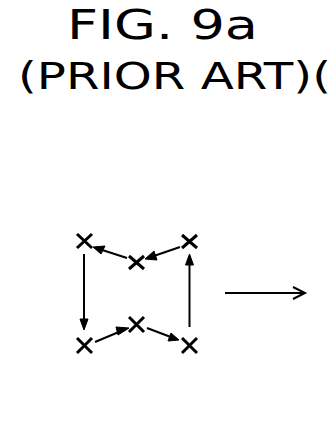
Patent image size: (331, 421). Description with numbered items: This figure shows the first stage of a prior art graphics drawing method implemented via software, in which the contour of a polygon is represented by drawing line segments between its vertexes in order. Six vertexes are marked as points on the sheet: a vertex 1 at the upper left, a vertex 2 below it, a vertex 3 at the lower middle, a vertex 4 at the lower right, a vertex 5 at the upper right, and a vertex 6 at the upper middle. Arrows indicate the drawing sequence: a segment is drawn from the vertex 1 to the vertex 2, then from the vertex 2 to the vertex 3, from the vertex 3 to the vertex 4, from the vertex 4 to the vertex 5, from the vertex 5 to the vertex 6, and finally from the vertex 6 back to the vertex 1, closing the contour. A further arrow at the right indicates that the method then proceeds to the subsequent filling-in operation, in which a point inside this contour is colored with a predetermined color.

The vertex 1 is at (81, 232).
The vertex 2 is at (82, 355).
The vertex 3 is at (136, 332).
The vertex 4 is at (192, 355).
The vertex 5 is at (192, 231).
The vertex 6 is at (136, 252).